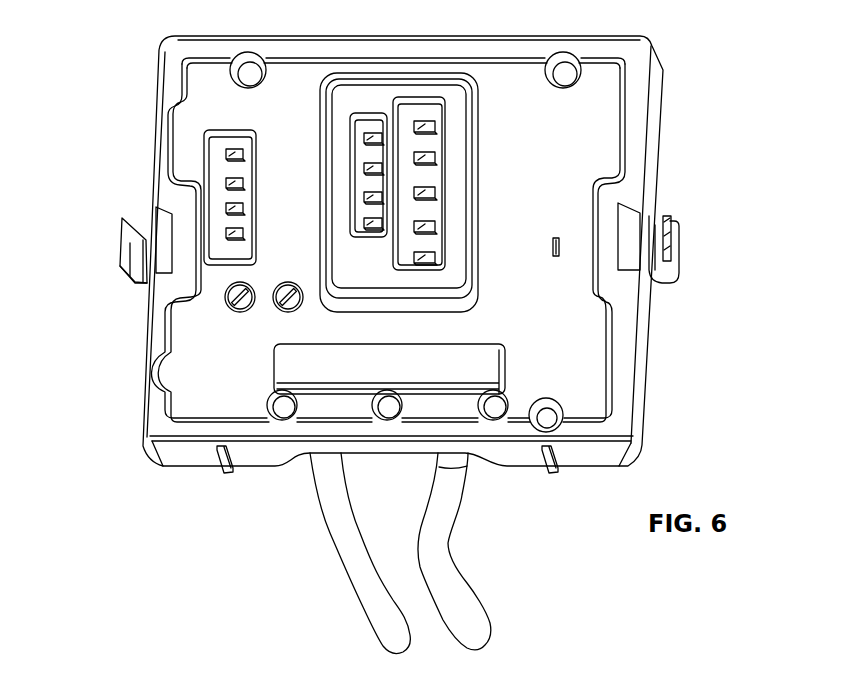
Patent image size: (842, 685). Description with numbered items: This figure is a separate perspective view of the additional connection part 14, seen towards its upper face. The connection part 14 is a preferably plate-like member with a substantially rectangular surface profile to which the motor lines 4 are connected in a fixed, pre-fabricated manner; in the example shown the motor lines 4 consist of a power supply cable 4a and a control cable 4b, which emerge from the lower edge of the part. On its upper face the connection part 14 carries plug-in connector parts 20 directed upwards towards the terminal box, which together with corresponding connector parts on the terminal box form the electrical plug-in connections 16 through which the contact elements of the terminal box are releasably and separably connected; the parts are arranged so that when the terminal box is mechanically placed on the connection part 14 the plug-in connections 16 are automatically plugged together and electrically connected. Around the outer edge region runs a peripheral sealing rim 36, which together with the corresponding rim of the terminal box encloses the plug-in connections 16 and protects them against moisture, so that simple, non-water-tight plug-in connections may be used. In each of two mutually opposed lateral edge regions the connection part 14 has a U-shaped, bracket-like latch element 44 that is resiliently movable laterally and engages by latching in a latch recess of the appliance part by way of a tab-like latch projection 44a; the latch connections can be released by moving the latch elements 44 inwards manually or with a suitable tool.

The motor lines 4 is at (395, 553).
The power supply cable 4a is at (378, 603).
The control cable 4b is at (458, 597).
The additional connection part 14 is at (170, 474).
The electrical plug-in connections 16 is at (347, 142).
The plug-in connector parts 20 is at (364, 140).
The sealing rim 36 is at (622, 371).
The latch element 44 is at (143, 240).
The latch projection 44a is at (120, 268).